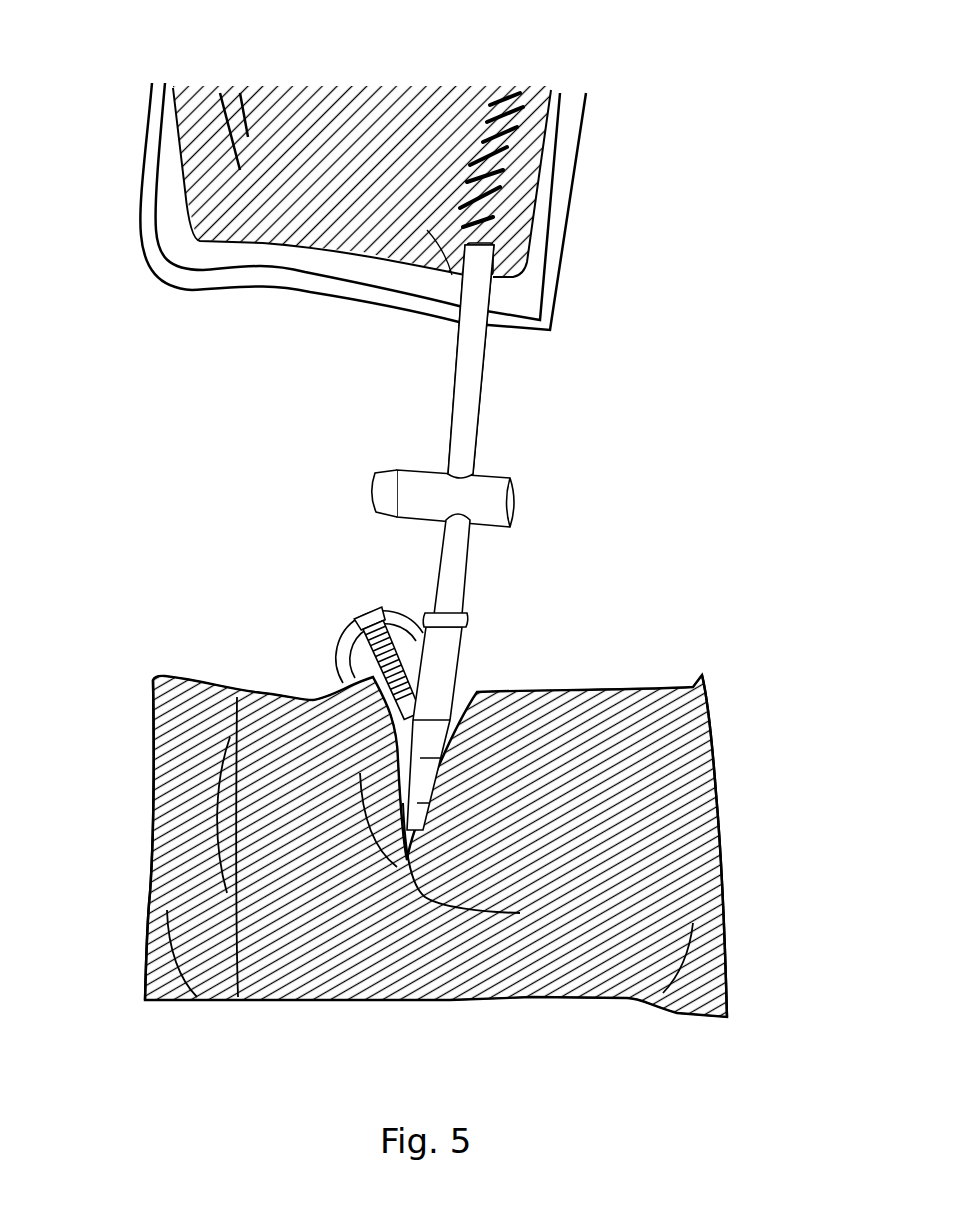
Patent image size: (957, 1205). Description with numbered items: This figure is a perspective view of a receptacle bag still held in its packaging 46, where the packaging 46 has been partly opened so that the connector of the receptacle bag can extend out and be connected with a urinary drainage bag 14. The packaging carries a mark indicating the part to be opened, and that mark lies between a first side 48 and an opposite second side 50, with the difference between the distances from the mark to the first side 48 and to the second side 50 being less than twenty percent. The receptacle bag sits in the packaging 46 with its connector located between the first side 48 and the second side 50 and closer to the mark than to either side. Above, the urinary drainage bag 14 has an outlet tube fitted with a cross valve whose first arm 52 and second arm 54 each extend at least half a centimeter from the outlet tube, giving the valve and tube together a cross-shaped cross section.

The urinary drainage bag 14 is at (605, 198).
The packaging 46 is at (518, 846).
The first side 48 is at (754, 846).
The second side 50 is at (135, 840).
The first arm 52 is at (335, 444).
The second arm 54 is at (534, 475).